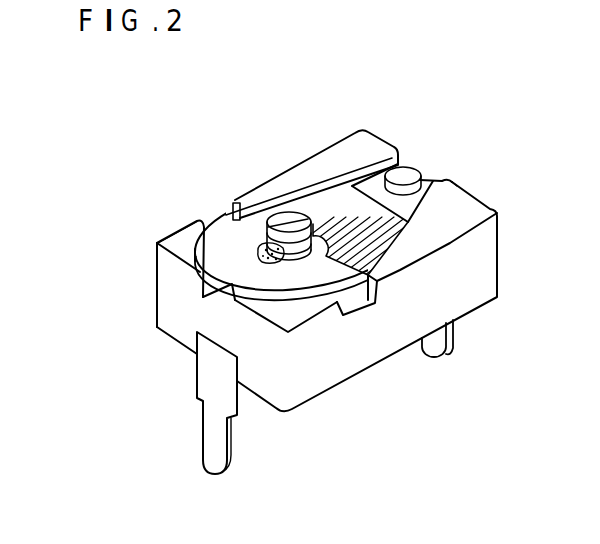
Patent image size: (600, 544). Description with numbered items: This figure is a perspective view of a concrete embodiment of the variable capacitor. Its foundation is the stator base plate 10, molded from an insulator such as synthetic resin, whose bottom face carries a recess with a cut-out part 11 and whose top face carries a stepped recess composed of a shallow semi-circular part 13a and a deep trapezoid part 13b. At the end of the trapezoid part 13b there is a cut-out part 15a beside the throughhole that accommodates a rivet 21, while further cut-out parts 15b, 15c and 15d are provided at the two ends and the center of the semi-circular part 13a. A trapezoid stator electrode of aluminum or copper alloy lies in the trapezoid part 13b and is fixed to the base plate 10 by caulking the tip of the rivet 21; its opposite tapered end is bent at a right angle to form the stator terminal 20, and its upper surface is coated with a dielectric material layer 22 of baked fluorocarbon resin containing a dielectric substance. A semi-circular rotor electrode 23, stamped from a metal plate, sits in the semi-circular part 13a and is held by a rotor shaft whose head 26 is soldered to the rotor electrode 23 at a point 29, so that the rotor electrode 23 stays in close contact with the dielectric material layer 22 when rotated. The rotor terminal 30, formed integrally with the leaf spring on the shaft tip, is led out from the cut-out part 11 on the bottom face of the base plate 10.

The stator base plate 10 is at (483, 278).
The cut-out part 11 is at (193, 345).
The shallow semi-circular part 13a is at (195, 265).
The deep trapezoid part 13b is at (350, 172).
The cut-out part 15a is at (399, 163).
The cut-out part 15b is at (235, 203).
The cut-out part 15c is at (360, 302).
The cut-out part 15d is at (205, 297).
The stator terminal 20 is at (455, 334).
The rivet 21 is at (408, 180).
The dielectric material layer 22 is at (467, 205).
The rotor electrode 23 is at (222, 243).
The head 26 is at (277, 215).
The soldering point 29 is at (272, 265).
The rotor terminal 30 is at (212, 418).